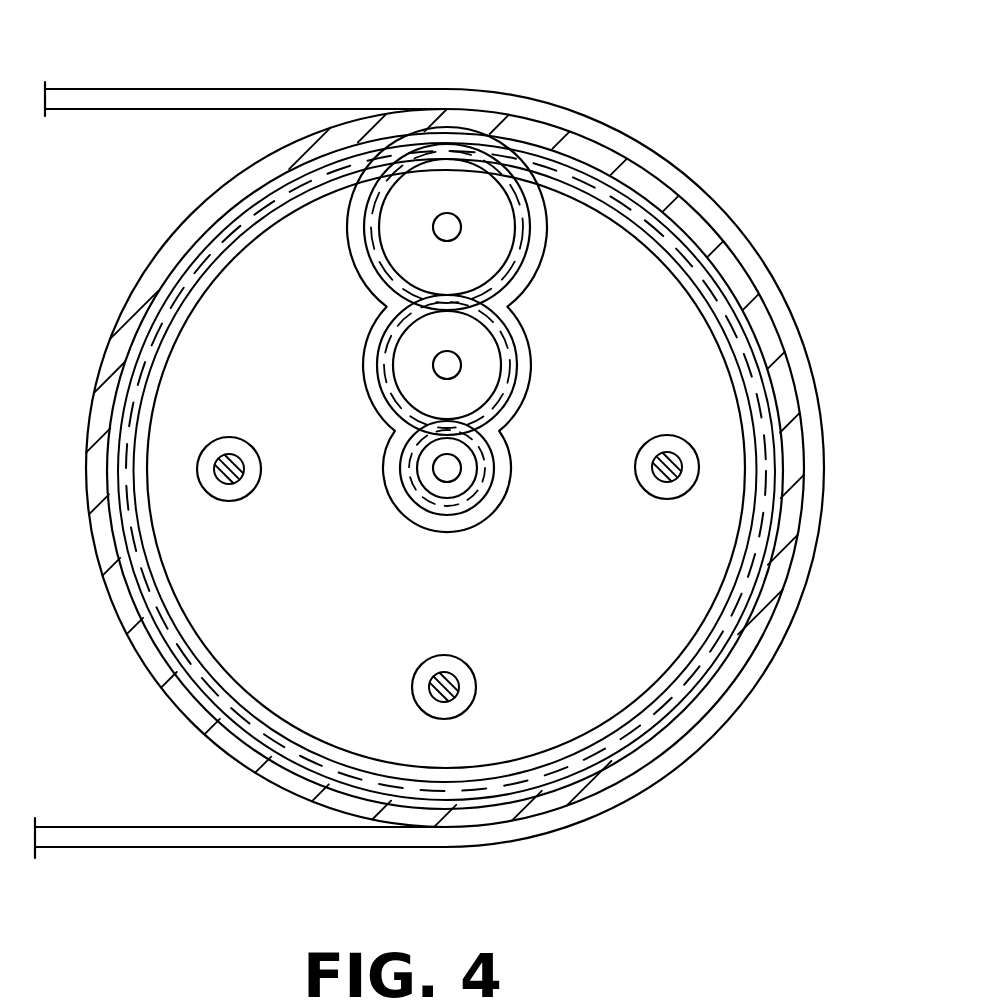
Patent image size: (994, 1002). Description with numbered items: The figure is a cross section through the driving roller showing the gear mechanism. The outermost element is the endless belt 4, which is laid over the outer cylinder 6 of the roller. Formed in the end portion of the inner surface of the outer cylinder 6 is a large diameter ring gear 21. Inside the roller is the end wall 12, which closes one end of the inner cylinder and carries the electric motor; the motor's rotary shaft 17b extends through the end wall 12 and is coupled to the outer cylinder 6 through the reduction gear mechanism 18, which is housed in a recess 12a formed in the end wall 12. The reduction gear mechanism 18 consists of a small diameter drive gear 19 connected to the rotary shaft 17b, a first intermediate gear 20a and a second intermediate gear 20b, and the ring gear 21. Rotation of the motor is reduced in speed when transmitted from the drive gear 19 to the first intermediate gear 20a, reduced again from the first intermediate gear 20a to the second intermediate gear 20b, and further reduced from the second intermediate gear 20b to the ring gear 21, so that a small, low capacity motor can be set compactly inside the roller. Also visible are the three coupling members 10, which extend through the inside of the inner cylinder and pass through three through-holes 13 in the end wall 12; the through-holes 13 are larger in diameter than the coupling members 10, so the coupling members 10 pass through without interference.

The endless belt 4 is at (125, 97).
The outer cylinder 6 is at (350, 130).
The ring gear 21 is at (593, 183).
The end wall 12 is at (692, 335).
The recess 12a is at (365, 272).
The reduction gear mechanism 18 is at (463, 352).
The second intermediate gear 20b is at (483, 270).
The first intermediate gear 20a is at (485, 373).
The drive gear 19 is at (465, 482).
The rotary shaft 17b is at (440, 475).
The coupling members 10 is at (226, 484).
The through-holes 13 is at (258, 485).